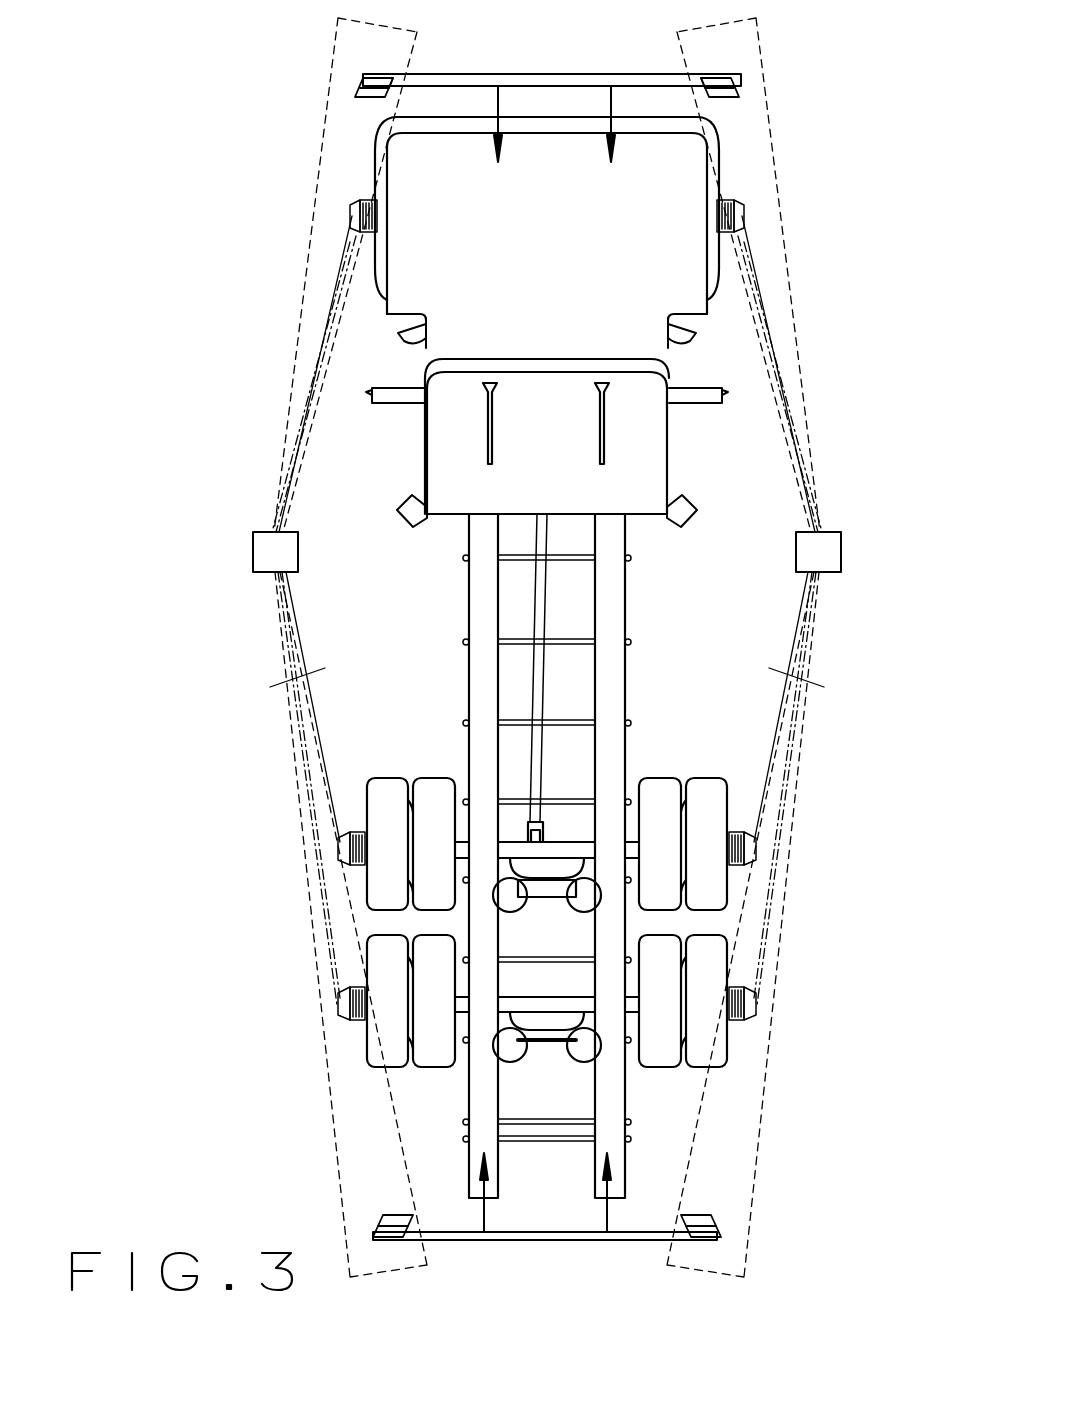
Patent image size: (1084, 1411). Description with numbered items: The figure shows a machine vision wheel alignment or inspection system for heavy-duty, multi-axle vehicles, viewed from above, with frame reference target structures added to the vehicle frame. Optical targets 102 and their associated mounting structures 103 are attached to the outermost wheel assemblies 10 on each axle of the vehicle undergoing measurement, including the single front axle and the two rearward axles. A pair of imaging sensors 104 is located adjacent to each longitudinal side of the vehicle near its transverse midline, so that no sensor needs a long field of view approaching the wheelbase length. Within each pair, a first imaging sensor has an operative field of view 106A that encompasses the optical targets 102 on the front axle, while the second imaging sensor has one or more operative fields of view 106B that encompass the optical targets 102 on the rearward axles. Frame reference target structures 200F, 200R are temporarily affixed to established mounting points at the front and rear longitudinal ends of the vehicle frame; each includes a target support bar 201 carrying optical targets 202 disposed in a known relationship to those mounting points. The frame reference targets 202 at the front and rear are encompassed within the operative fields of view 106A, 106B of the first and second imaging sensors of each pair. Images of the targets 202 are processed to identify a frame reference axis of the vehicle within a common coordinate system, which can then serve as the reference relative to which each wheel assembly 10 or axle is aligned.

The wheel assembly 10 is at (380, 158).
The optical target 102 is at (362, 210).
The mounting structure 103 is at (357, 205).
The imaging sensor 104 is at (253, 553).
The operative field of view 106A is at (319, 274).
The operative field of view 106B is at (296, 680).
The front frame reference target structure 200F is at (545, 42).
The rear frame reference target structure 200R is at (571, 1262).
The target support bar 201 is at (575, 72).
The optical target 202 is at (360, 86).